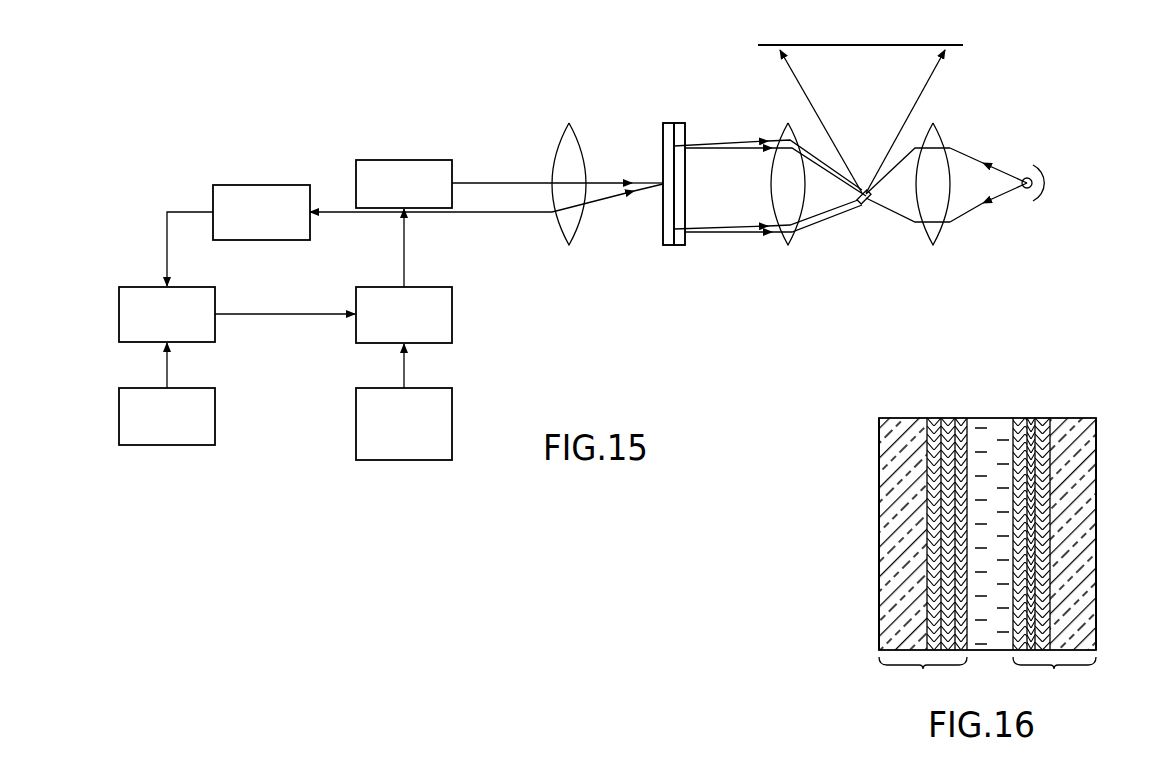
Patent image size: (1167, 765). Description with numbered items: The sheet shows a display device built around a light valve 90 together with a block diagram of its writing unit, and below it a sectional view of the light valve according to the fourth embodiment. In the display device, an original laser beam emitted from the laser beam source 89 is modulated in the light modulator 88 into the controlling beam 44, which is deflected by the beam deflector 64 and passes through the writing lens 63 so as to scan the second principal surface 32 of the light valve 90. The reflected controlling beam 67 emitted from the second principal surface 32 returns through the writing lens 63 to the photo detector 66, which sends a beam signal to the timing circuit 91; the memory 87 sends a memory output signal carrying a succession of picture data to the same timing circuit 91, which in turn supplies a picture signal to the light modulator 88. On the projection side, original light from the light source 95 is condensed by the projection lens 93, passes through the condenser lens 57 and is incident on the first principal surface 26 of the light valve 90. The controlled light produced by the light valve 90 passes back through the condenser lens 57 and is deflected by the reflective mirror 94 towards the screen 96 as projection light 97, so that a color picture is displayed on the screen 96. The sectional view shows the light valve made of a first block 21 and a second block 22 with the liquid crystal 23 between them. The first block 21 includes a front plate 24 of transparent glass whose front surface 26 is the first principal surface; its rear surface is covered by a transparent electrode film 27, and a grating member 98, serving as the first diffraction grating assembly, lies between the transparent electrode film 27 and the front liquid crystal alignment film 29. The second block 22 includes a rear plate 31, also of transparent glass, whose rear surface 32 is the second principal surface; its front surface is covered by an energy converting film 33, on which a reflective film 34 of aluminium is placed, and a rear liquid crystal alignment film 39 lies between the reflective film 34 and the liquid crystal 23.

In FIG. 15, the photo detector 66 is at (262, 185).
In FIG. 15, the beam deflector 64 is at (407, 160).
In FIG. 15, the controlling beam 44 is at (500, 183).
In FIG. 15, the writing lens 63 is at (580, 128).
In FIG. 15, the condenser lens 57 is at (778, 130).
In FIG. 15, the screen 96 is at (905, 45).
In FIG. 15, the projection light 97 is at (926, 88).
In FIG. 15, the projection lens 93 is at (955, 135).
In FIG. 15, the reflective mirror 94 is at (1040, 170).
In FIG. 15, the front surface (first principal surface) 26 is at (688, 207).
In FIG. 16, the front surface (first principal surface) 26 is at (1098, 470).
In FIG. 15, the rear surface (second principal surface) 32 is at (662, 212).
In FIG. 16, the rear surface (second principal surface) 32 is at (879, 465).
In FIG. 15, the light source 95 is at (868, 206).
In FIG. 15, the reflected controlling beam 67 is at (504, 215).
In FIG. 15, the light valve 90 is at (673, 247).
In FIG. 15, the timing circuit 91 is at (192, 287).
In FIG. 15, the light modulator 88 is at (432, 287).
In FIG. 15, the memory 87 is at (192, 388).
In FIG. 15, the laser beam source 89 is at (432, 388).
In FIG. 16, the rear plate 31 is at (893, 418).
In FIG. 16, the energy converting film 33 is at (933, 418).
In FIG. 16, the reflective film 34 is at (950, 418).
In FIG. 16, the rear liquid crystal alignment film 39 is at (960, 418).
In FIG. 16, the liquid crystal 23 is at (987, 655).
In FIG. 16, the front liquid crystal alignment film 29 is at (1018, 418).
In FIG. 16, the grating member 98 is at (1030, 418).
In FIG. 16, the transparent electrode film 27 is at (1043, 418).
In FIG. 16, the front plate 24 is at (1083, 418).
In FIG. 16, the second block 22 is at (923, 675).
In FIG. 16, the first block 21 is at (1054, 675).